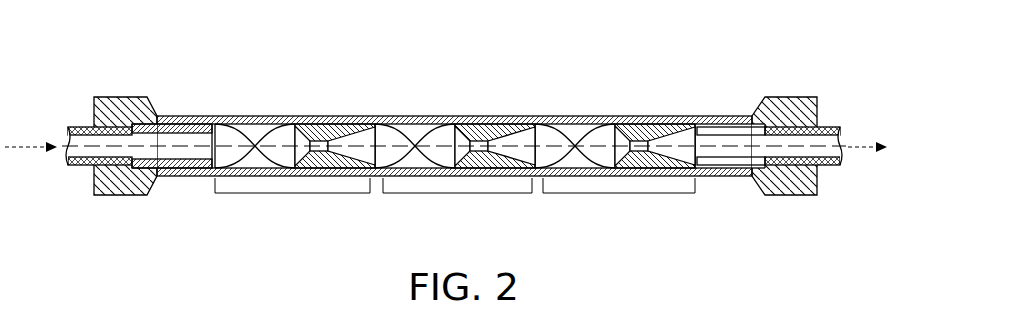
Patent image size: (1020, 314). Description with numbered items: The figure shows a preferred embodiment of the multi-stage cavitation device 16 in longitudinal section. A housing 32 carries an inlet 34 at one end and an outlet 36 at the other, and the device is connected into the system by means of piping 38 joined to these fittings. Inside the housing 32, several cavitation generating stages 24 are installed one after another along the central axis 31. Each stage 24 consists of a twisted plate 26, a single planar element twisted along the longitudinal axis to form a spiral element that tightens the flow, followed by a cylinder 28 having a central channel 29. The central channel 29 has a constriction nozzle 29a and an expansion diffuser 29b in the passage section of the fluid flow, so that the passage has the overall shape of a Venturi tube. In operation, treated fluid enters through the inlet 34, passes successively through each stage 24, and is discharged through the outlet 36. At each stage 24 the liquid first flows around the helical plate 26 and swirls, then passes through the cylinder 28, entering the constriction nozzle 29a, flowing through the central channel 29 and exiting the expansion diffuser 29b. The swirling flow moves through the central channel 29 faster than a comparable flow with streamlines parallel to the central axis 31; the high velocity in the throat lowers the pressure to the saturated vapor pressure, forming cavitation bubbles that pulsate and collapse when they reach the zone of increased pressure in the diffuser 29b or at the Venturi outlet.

The multi-stage cavitation device 16 is at (280, 57).
The cavitation generating stage 24 is at (292, 194).
The twisted plate 26 is at (228, 127).
The cylinder 28 is at (320, 124).
The central channel 29 is at (318, 152).
The constriction nozzle 29a is at (447, 127).
The expansion diffuser 29b is at (527, 130).
The central axis 31 is at (167, 140).
The housing 32 is at (411, 116).
The inlet 34 is at (119, 96).
The outlet 36 is at (786, 95).
The piping 38 is at (77, 127).